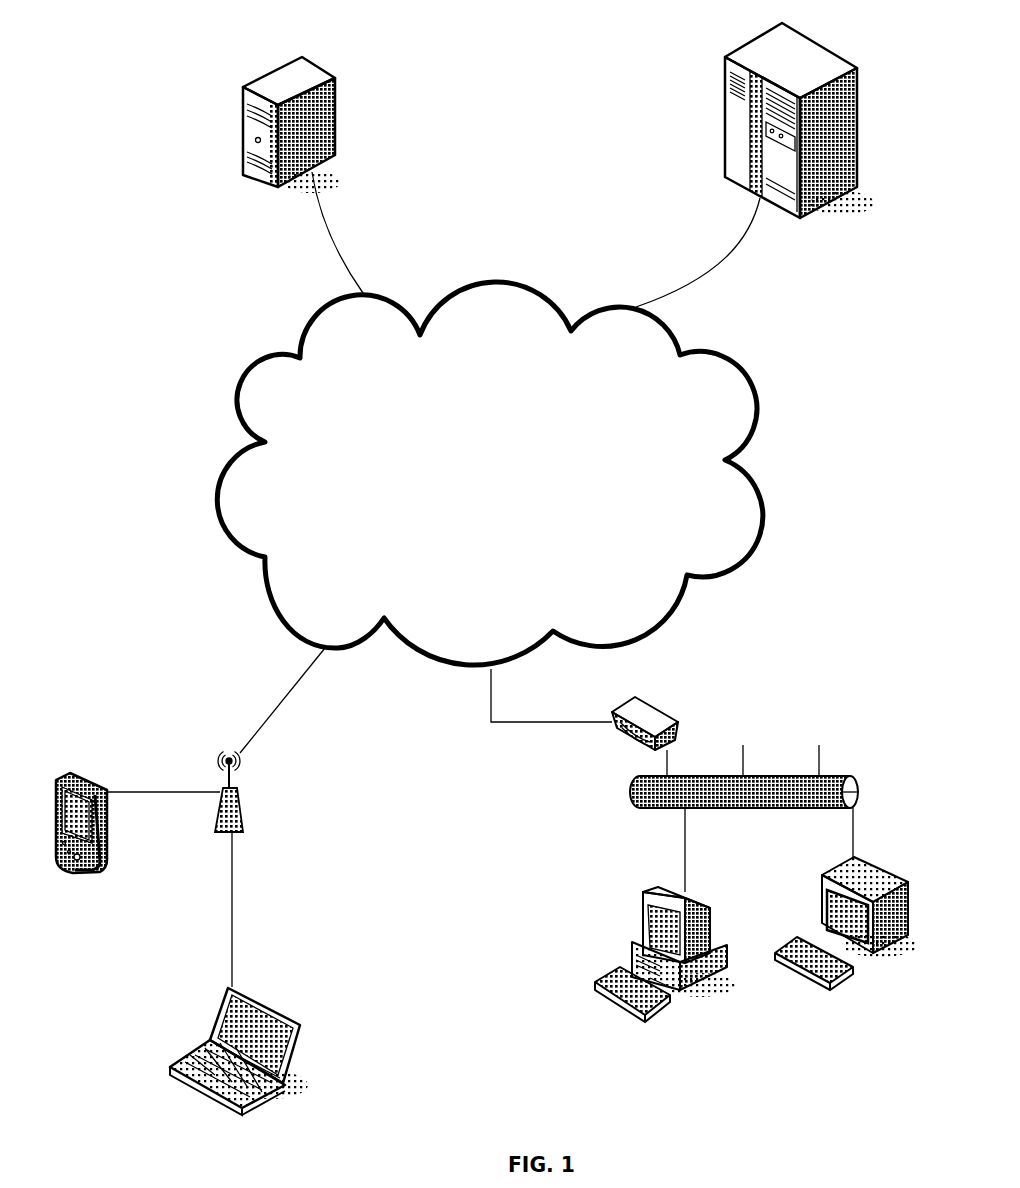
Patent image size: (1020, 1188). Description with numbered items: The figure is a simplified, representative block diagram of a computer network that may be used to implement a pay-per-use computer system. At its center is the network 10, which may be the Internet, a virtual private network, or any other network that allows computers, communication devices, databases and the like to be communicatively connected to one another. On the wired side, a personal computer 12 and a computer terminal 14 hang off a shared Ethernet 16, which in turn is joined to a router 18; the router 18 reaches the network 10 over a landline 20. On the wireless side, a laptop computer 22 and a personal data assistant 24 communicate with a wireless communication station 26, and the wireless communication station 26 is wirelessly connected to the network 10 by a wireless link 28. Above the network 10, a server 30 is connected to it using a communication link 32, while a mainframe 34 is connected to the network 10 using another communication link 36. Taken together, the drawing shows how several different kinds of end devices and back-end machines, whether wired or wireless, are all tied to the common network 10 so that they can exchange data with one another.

The network 10 is at (180, 359).
The personal computer 12 is at (640, 935).
The computer terminal 14 is at (888, 877).
The Ethernet 16 is at (851, 776).
The router 18 is at (677, 722).
The landline 20 is at (530, 723).
The laptop computer 22 is at (260, 1098).
The personal data assistant 24 is at (83, 780).
The wireless communication station 26 is at (243, 823).
The wireless link 28 is at (275, 710).
The server 30 is at (335, 120).
The communication link 32 is at (343, 270).
The mainframe 34 is at (815, 212).
The communication link 36 is at (728, 250).